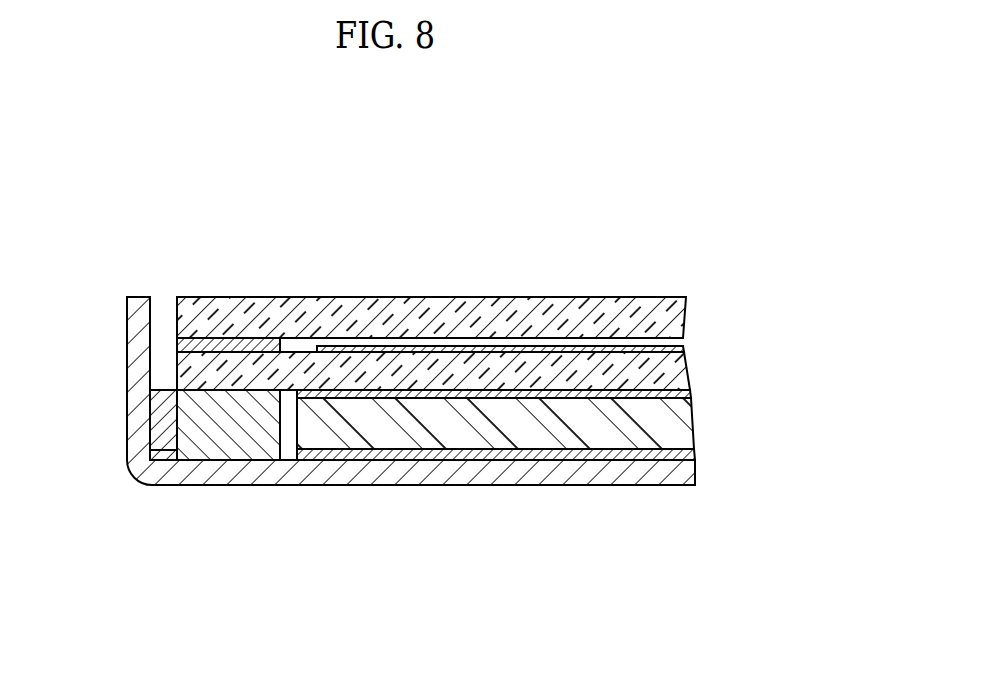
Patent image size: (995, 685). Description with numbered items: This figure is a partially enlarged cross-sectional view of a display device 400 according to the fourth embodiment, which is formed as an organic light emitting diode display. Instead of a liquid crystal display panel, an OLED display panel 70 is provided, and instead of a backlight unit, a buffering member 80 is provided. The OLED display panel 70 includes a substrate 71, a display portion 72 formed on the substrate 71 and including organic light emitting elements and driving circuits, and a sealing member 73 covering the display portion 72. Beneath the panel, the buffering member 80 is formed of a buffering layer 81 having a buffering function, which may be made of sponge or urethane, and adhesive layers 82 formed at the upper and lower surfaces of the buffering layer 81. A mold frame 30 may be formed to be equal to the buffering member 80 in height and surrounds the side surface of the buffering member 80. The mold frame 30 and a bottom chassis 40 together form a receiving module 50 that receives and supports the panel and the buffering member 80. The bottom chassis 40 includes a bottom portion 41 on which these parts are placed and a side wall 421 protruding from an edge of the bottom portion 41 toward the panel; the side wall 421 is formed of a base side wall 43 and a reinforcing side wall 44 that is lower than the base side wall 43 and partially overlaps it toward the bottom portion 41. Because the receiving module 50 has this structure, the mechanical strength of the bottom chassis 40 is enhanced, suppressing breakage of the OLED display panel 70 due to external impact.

The display device 400 is at (406, 229).
The OLED display panel 70 is at (659, 285).
The substrate 71 is at (672, 366).
The display portion 72 is at (556, 346).
The sealing member 73 is at (672, 318).
The bottom chassis 40 is at (138, 491).
The bottom portion 41 is at (382, 470).
The side wall 421 is at (83, 360).
The base side wall 43 is at (140, 372).
The reinforcing side wall 44 is at (162, 418).
The mold frame 30 is at (216, 456).
The receiving module 50 is at (228, 535).
The buffering member 80 is at (650, 535).
The buffering layer 81 is at (626, 438).
The adhesive layer 82 is at (511, 397).